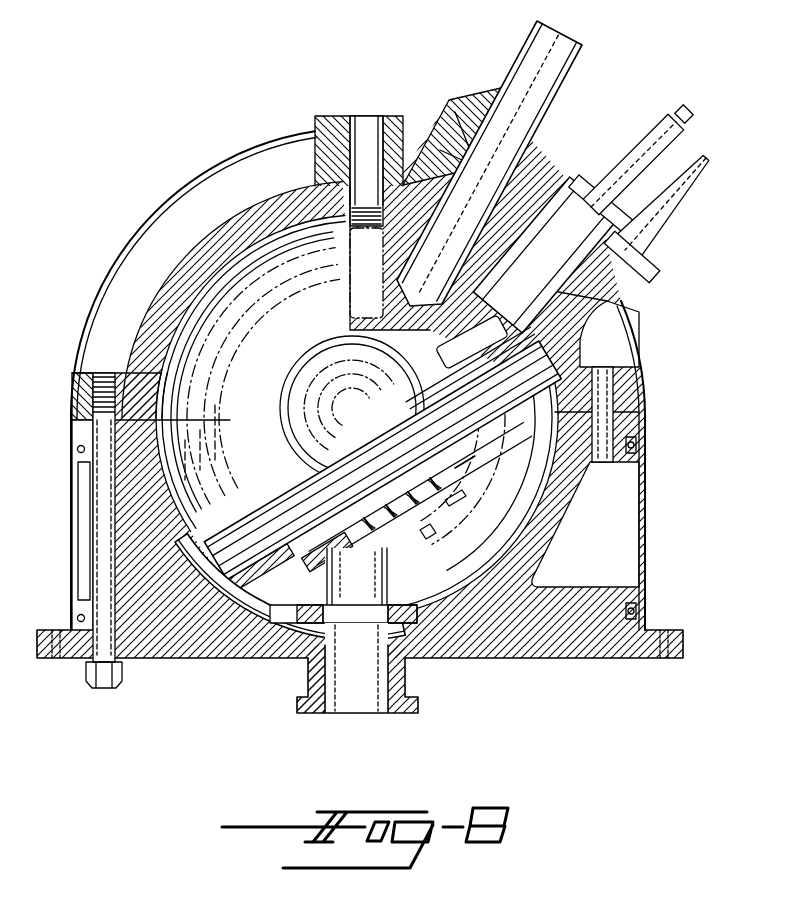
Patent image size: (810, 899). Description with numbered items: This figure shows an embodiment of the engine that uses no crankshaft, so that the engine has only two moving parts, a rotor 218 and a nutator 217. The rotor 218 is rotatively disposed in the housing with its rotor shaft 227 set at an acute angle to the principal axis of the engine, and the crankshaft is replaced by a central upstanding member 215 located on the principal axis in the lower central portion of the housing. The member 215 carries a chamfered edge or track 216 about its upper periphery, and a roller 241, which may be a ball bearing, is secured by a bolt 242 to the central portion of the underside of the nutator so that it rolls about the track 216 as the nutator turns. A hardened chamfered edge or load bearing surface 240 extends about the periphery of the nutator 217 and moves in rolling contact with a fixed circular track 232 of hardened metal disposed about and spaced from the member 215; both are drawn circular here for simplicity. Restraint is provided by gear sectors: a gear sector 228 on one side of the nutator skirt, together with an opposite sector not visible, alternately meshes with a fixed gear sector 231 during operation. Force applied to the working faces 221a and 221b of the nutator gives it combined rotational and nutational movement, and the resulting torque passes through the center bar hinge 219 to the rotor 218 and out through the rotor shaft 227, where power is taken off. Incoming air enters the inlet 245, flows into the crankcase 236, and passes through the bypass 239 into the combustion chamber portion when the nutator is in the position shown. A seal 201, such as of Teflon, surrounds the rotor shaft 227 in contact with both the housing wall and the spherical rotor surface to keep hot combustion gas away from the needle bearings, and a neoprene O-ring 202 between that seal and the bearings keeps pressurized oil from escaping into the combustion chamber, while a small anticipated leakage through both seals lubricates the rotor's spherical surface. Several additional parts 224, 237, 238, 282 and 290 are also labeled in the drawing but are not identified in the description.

The seal 201 is at (372, 116).
The O-ring 202 is at (572, 178).
The central upstanding member 215 is at (392, 585).
The chamfered edge or track 216 is at (347, 546).
The nutator 217 is at (500, 448).
The rotor 218 is at (392, 116).
The center bar hinge 219 is at (316, 344).
The working face 221a is at (258, 510).
The working face 221b is at (470, 362).
The fitting 224 is at (650, 236).
The rotor shaft 227 is at (565, 30).
The gear sector 228 is at (385, 502).
The fixed gear sector 231 is at (455, 598).
The fixed circular track 232 is at (437, 605).
The crankcase 236 is at (513, 533).
The slide 237 is at (372, 452).
The mounting block 238 is at (445, 98).
The bypass 239 is at (283, 600).
The chamfered edge or load bearing surface 240 is at (470, 467).
The roller 241 is at (452, 503).
The bolt 242 is at (425, 538).
The inlet 245 is at (363, 692).
The rotor 282 is at (290, 375).
The hose fitting 290 is at (667, 116).